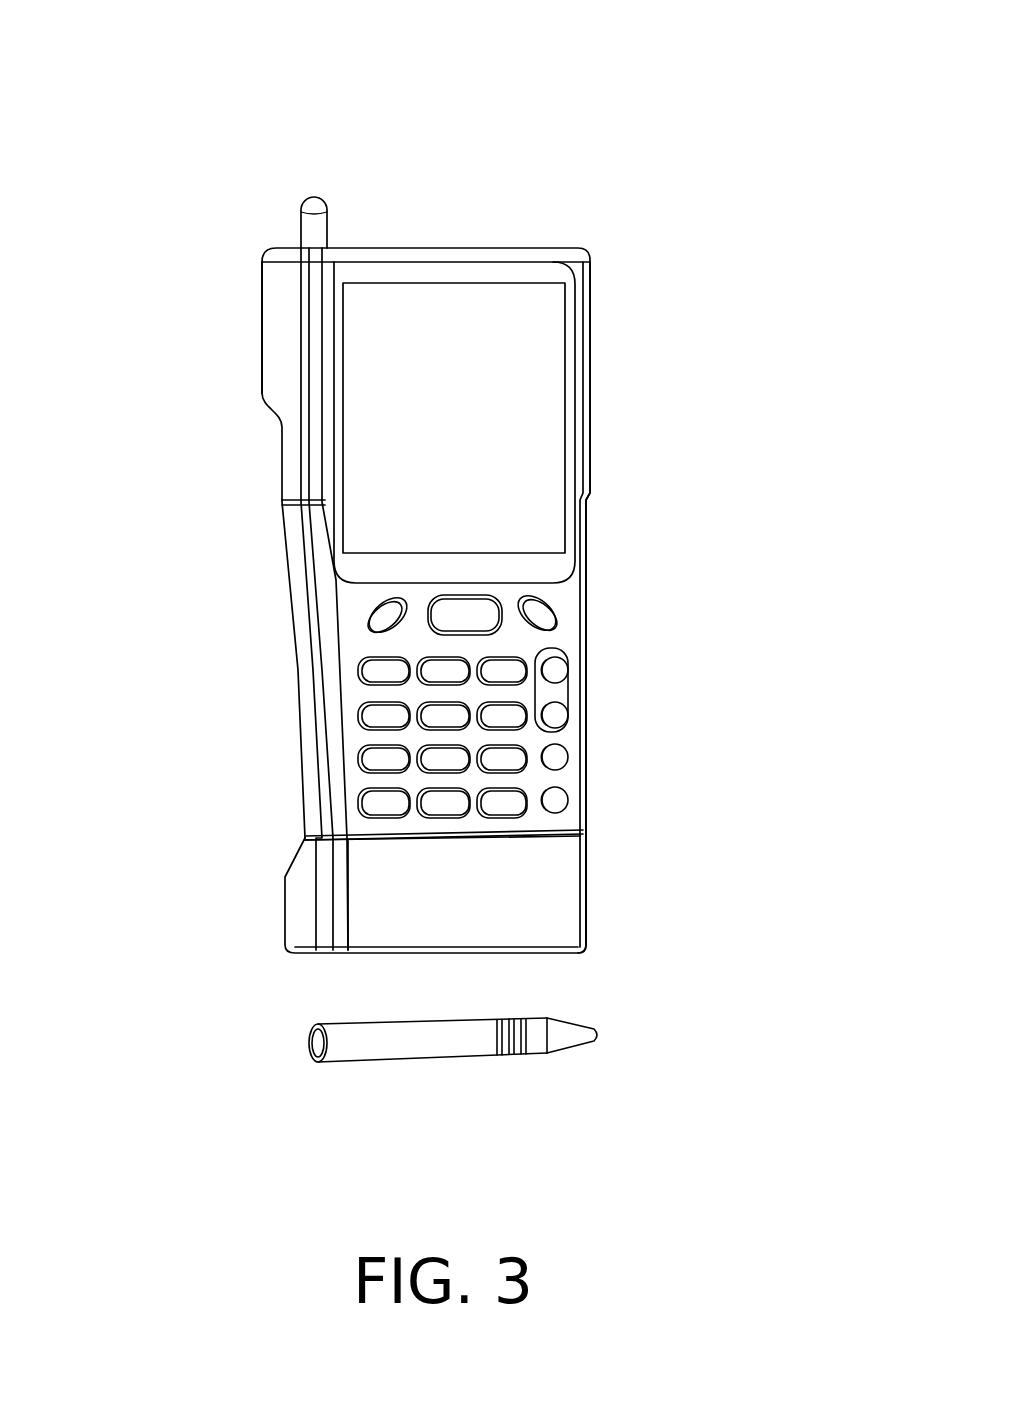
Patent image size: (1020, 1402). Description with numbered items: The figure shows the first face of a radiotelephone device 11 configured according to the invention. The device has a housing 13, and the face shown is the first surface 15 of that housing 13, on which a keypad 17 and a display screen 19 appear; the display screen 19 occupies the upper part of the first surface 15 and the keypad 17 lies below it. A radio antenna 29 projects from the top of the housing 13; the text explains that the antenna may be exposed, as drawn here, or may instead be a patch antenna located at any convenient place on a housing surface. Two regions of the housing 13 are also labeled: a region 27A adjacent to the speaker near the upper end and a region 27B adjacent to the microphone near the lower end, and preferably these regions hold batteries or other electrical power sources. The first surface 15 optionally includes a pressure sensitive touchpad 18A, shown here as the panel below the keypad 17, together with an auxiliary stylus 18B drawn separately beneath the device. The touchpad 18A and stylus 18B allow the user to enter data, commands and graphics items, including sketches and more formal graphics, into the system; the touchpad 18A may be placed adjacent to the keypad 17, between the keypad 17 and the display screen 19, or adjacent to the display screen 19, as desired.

The radiotelephone device 11 is at (457, 501).
The housing 13 is at (297, 910).
The first surface 15 is at (627, 873).
The keypad 17 is at (568, 725).
The display screen 19 is at (454, 360).
The pressure sensitive touchpad 18A is at (357, 913).
The auxiliary stylus 18B is at (463, 1077).
The region adjacent to the speaker 27A is at (177, 312).
The region adjacent to the microphone 27B is at (692, 896).
The radio antenna 29 is at (243, 174).